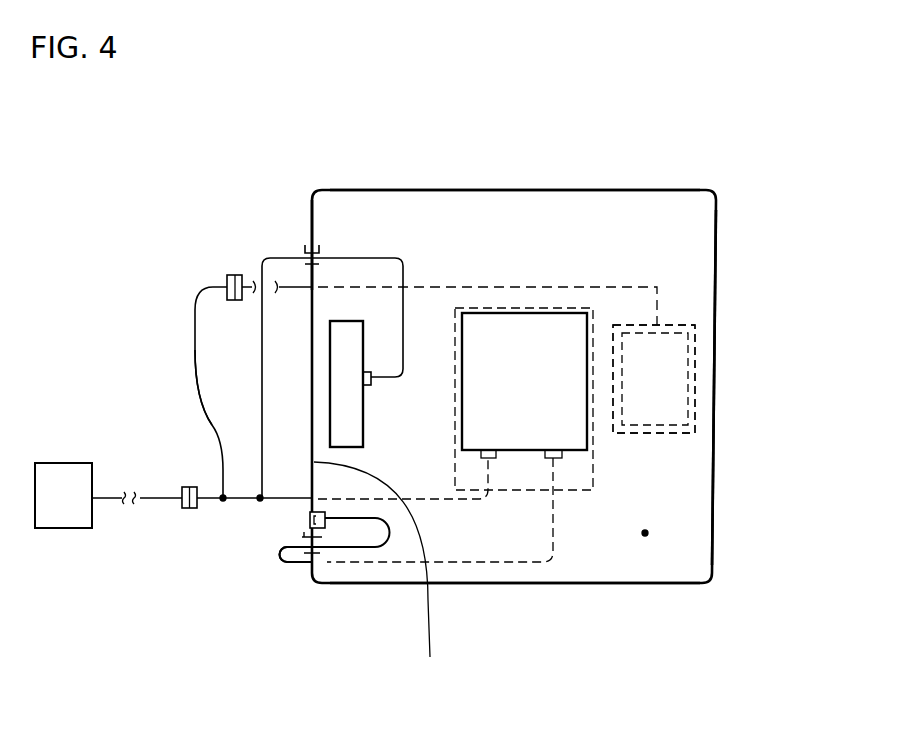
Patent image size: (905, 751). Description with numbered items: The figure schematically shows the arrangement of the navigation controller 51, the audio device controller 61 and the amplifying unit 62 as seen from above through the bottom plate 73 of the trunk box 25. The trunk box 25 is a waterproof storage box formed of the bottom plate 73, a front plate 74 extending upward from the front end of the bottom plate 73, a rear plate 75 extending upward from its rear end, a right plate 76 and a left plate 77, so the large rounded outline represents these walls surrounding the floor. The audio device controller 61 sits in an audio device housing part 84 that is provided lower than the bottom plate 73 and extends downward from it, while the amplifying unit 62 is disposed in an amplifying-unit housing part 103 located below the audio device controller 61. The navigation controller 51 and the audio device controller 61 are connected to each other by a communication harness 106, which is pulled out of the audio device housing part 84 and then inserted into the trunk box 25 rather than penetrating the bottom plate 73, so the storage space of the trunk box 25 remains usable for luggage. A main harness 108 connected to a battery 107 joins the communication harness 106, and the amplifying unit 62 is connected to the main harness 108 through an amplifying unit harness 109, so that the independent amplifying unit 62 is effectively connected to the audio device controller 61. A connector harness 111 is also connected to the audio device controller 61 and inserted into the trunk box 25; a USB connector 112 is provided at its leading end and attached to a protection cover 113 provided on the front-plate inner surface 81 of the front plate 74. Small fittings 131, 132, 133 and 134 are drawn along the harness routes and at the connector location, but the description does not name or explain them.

The trunk box 25 is at (712, 182).
The right plate 76 is at (500, 192).
The rear plate 75 is at (716, 378).
The left plate 77 is at (500, 584).
The bottom plate 73 is at (645, 533).
The front plate 74 is at (308, 387).
The navigation controller 51 is at (338, 413).
The connector 133 is at (308, 248).
The valve 131 is at (232, 275).
The communication harness 106 is at (262, 322).
The amplifying unit harness 109 is at (198, 380).
The audio device controller 61 is at (497, 330).
The audio device housing part 84 is at (578, 491).
The amplifying unit 62 is at (675, 340).
The amplifying-unit housing part 103 is at (667, 434).
The battery 107 is at (60, 522).
The main harness 108 is at (148, 500).
The valve 132 is at (189, 510).
The protection cover 113 is at (312, 492).
The connector harness 111 is at (290, 566).
The USB connector 112 is at (318, 564).
The connector 134 is at (323, 588).
The front-plate inner surface 81 is at (383, 574).